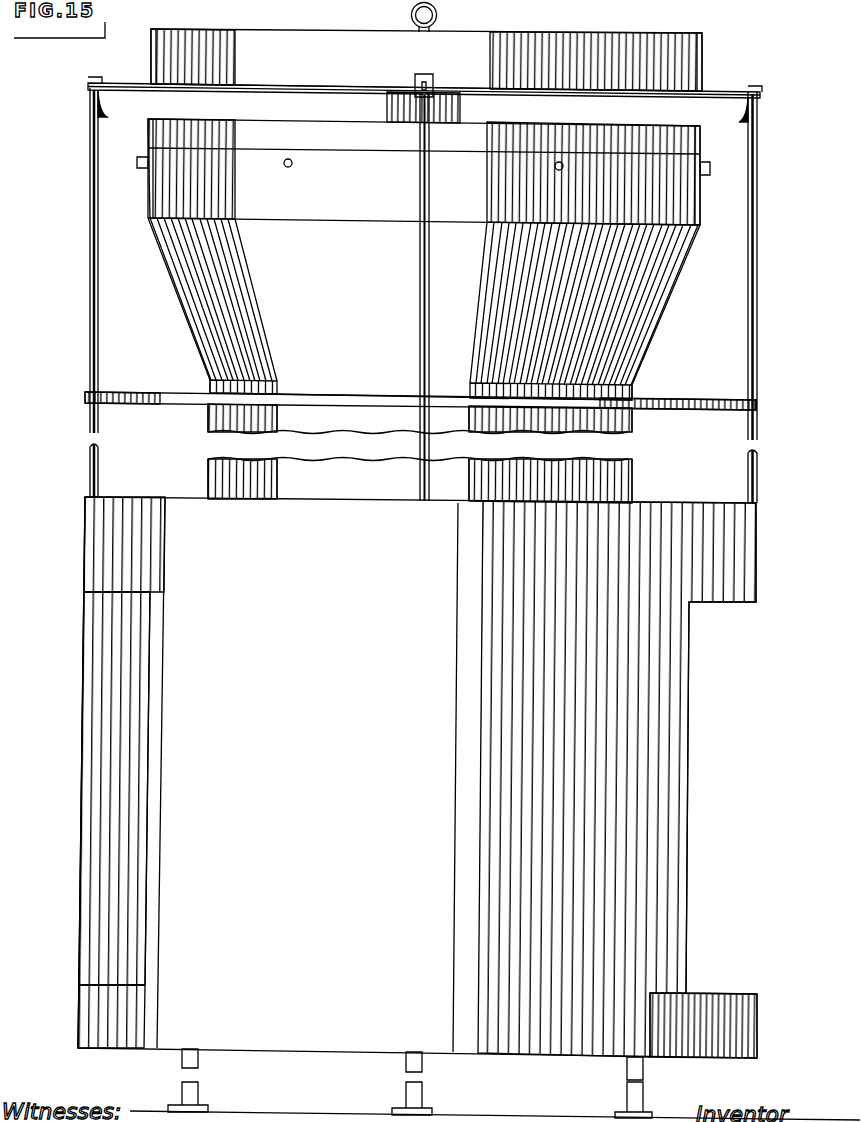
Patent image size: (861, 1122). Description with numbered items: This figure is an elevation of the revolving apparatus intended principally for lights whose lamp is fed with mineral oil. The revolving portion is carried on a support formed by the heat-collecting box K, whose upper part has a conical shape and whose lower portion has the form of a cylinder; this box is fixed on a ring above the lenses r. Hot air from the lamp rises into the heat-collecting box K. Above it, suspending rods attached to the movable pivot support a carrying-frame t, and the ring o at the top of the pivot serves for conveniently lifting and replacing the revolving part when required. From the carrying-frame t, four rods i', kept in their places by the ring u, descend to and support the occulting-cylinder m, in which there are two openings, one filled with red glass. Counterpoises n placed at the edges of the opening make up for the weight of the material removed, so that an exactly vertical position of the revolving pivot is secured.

The carrying-frame t is at (150, 82).
The ring o is at (433, 16).
The suspending-rods i' is at (423, 295).
The ring u is at (100, 403).
The heat-collecting box K is at (423, 311).
The occulting-cylinder m is at (469, 808).
The lenses r is at (84, 731).
The counterpoises n is at (716, 993).